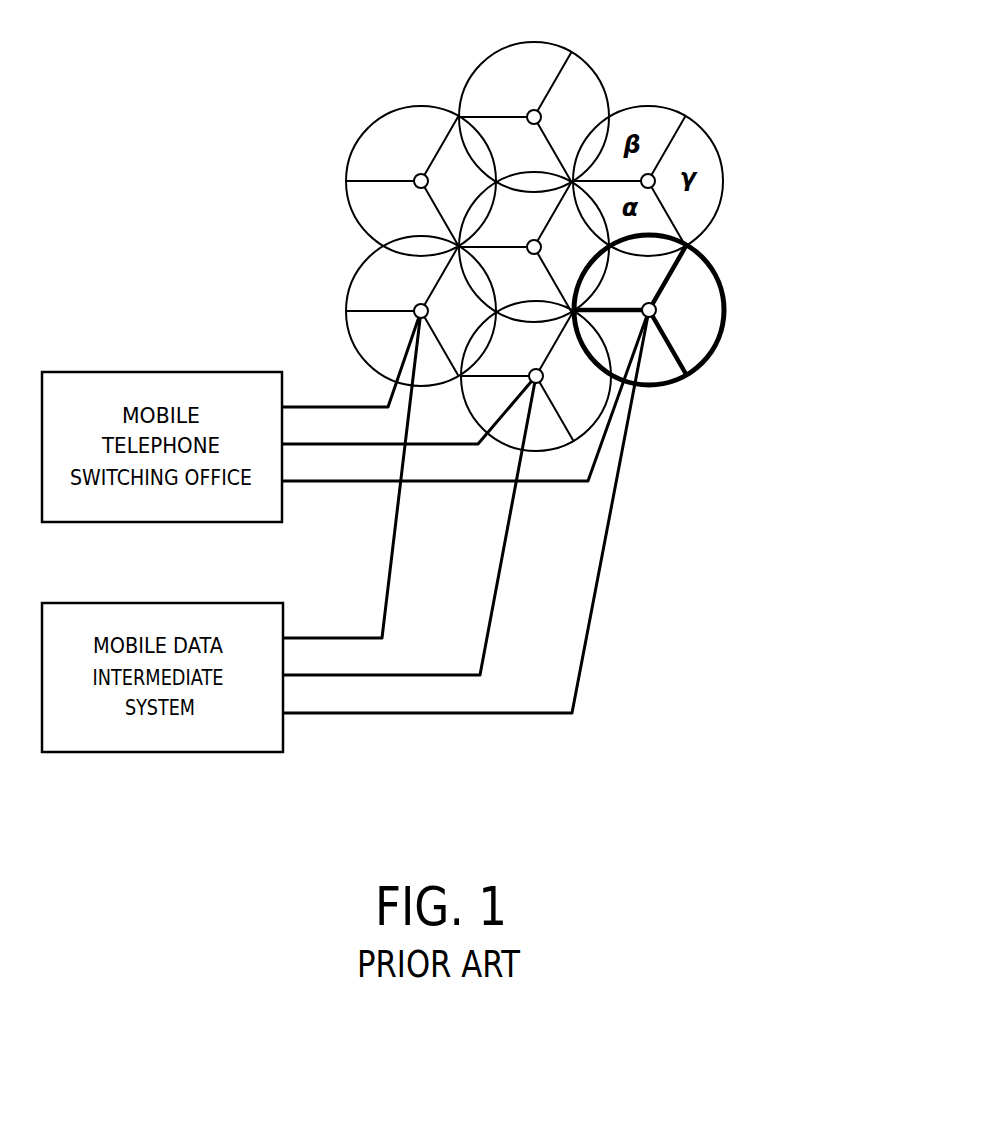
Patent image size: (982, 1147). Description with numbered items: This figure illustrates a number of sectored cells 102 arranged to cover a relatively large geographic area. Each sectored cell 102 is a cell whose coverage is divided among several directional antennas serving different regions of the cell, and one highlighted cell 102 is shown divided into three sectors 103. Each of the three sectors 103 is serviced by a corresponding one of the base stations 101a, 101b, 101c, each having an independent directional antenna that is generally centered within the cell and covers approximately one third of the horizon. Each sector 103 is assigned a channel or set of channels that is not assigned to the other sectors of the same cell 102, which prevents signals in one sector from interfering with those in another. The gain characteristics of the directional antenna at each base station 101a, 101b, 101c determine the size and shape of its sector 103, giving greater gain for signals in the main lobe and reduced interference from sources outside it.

The base station 101a is at (656, 310).
The base station 101b is at (541, 245).
The base station 101c is at (541, 114).
The sectored cell 102 is at (727, 279).
The sector 103 is at (603, 297).